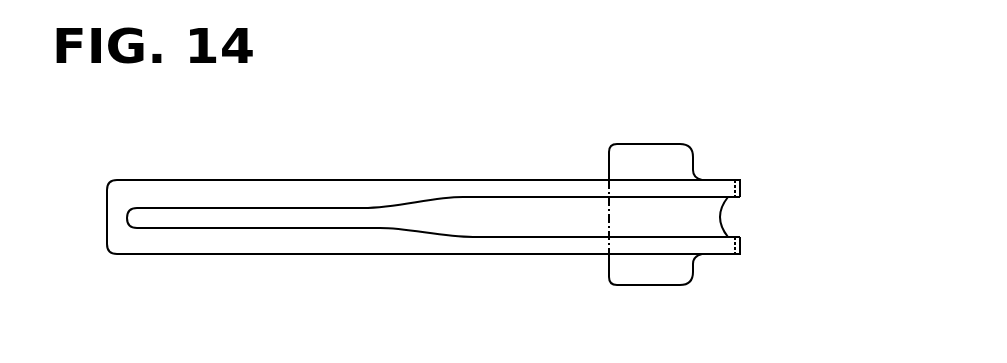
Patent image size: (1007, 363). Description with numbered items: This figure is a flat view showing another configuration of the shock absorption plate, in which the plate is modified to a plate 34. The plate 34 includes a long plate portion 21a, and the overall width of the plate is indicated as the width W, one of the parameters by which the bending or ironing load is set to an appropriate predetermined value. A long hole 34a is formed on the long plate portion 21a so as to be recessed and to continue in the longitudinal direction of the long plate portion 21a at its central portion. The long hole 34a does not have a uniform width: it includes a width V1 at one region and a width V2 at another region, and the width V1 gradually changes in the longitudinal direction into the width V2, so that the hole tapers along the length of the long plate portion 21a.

The long plate portion 21a is at (223, 180).
The plate 34 is at (423, 210).
The long hole 34a is at (510, 225).
The width W is at (108, 254).
The width V1 is at (745, 197).
The width V2 is at (297, 180).